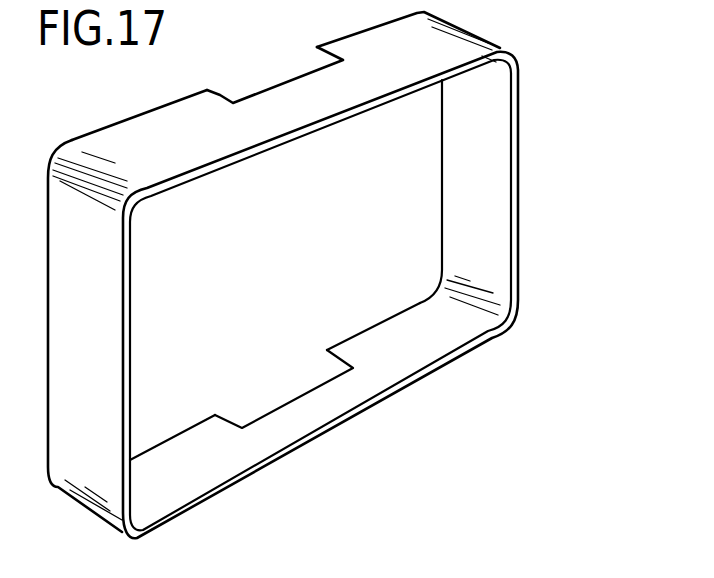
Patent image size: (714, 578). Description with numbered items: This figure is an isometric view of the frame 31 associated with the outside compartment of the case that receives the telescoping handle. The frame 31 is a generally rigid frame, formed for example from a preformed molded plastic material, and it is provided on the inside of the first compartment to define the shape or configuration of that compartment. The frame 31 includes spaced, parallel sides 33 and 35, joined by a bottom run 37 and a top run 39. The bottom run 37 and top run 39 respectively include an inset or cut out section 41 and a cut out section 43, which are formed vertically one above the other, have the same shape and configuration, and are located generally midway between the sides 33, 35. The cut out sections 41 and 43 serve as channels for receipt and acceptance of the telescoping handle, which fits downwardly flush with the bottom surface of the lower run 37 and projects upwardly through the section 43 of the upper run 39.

The frame 31 is at (497, 257).
The side 33 is at (498, 113).
The side 35 is at (99, 306).
The bottom run 37 is at (196, 432).
The top run 39 is at (155, 128).
The cut out section 41 is at (230, 418).
The cut out section 43 is at (221, 94).